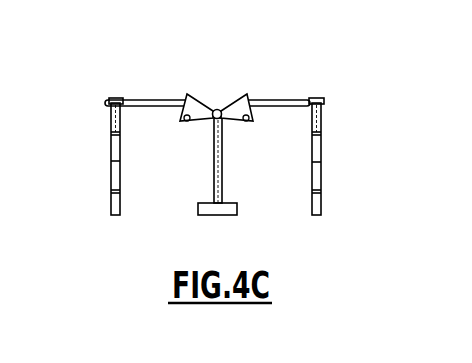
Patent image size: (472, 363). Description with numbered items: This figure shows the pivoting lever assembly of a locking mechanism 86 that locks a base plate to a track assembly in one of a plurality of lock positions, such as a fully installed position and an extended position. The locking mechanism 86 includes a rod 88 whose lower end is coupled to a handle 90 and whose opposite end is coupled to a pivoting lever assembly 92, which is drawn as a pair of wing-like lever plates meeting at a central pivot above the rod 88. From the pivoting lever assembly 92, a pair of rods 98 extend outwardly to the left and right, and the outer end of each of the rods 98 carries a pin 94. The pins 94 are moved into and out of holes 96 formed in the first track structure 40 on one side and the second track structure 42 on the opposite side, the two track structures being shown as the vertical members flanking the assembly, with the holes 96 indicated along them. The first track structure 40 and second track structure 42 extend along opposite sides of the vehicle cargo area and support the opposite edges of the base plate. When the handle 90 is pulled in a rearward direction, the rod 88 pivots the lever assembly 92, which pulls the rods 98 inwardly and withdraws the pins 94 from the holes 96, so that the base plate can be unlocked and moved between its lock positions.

The locking mechanism 86 is at (221, 128).
The rod 88 is at (222, 148).
The handle 90 is at (208, 215).
The pivoting lever assembly 92 is at (222, 86).
The pins 94 is at (108, 100).
The holes 96 is at (112, 118).
The rods 98 is at (150, 99).
The first track structure 40 is at (111, 176).
The second track structure 42 is at (322, 173).